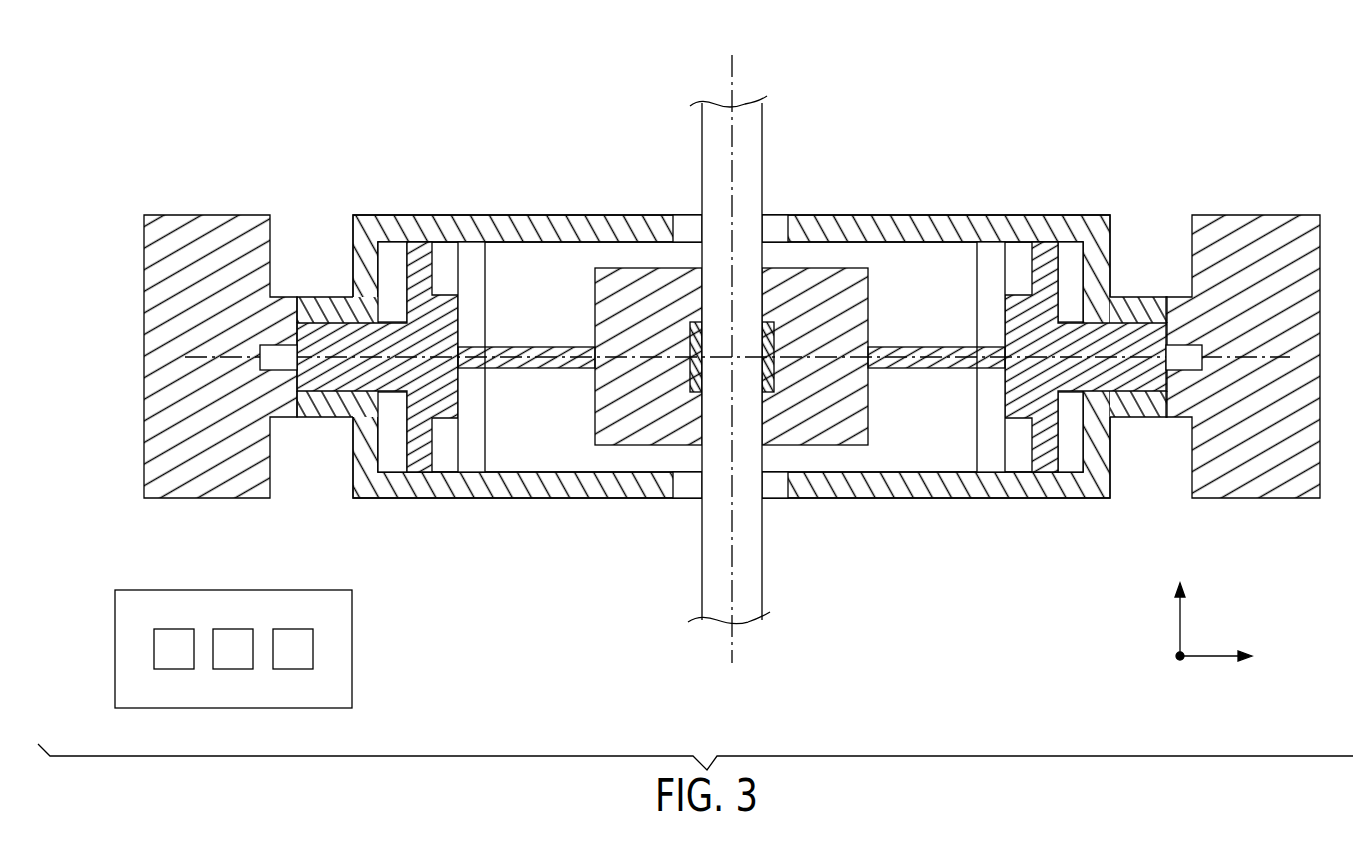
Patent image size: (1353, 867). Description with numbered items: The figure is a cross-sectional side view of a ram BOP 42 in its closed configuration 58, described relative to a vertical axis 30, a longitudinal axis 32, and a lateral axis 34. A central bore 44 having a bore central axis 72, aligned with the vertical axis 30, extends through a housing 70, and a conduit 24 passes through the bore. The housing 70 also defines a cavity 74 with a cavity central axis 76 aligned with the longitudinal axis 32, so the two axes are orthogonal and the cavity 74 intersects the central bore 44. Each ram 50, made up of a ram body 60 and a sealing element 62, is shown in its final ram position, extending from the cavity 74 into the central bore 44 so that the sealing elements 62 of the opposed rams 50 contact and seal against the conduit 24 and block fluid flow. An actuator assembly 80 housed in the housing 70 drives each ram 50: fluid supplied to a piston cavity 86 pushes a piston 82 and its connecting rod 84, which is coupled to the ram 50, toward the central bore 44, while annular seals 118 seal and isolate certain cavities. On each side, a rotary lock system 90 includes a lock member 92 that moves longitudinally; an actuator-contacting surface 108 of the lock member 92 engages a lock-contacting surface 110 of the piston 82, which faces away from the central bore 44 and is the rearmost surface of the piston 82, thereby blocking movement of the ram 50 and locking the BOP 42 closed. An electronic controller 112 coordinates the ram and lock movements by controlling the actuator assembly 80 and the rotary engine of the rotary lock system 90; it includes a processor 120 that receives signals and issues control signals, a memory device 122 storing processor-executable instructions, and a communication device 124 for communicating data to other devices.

The conduit 24 is at (752, 150).
The vertical axis 30 is at (1182, 626).
The longitudinal axis 32 is at (1207, 657).
The lateral axis 34 is at (1177, 657).
The BOP 42 is at (262, 163).
The central bore 44 is at (675, 477).
The ram 50 is at (609, 268).
The closed configuration 58 is at (283, 140).
The ram body 60 is at (700, 282).
The sealing element 62 is at (702, 337).
The housing 70 is at (312, 418).
The bore central axis 72 is at (733, 625).
The cavity 74 is at (512, 243).
The cavity central axis 76 is at (202, 362).
The actuator assembly 80 is at (315, 277).
The piston 82 is at (445, 243).
The connecting rod 84 is at (547, 369).
The piston cavity 86 is at (354, 303).
The rotary lock system 90 is at (175, 195).
The lock member 92 is at (259, 366).
The actuator-contacting surface 108 is at (297, 357).
The lock-contacting surface 110 is at (300, 360).
The electronic controller 112 is at (113, 650).
The seals 118 is at (421, 245).
The processor 120 is at (175, 629).
The memory device 122 is at (233, 669).
The communication device 124 is at (290, 629).